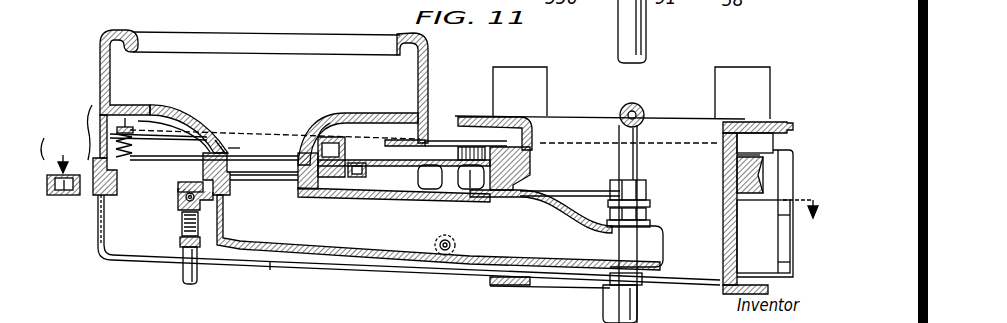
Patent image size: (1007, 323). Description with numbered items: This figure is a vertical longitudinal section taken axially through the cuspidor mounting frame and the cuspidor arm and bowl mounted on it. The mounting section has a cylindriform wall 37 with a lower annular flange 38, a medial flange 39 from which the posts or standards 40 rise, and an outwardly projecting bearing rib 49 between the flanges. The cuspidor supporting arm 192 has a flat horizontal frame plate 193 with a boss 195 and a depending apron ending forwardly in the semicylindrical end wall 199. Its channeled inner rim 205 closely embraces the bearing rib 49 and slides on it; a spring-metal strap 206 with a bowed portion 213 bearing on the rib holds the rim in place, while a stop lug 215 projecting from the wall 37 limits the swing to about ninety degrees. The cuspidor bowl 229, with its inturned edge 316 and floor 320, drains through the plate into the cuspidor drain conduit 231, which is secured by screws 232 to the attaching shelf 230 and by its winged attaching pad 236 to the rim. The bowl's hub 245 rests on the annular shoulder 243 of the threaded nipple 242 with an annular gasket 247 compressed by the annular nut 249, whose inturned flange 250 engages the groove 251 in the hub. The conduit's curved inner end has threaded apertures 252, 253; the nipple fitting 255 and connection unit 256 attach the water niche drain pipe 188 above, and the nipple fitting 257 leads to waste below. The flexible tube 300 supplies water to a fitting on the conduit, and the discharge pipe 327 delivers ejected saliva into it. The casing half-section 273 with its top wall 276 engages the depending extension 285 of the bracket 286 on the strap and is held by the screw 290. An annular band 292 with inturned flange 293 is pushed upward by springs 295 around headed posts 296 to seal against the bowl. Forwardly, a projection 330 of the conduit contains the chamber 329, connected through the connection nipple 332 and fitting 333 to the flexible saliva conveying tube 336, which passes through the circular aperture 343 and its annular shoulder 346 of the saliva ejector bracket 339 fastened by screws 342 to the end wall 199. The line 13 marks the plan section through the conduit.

The section line 13— 13 is at (433, 161).
The cylindriform wall 37 is at (723, 248).
The lower annular horizontal flange 38 is at (768, 291).
The medial flange 39 is at (778, 122).
The posts or standards 40 is at (517, 73).
The annular rectangular bearing rib 49 is at (760, 176).
The water niche drain pipe 188 is at (643, 125).
The cuspidor supporting arm 192 is at (183, 120).
The frame plate 193 is at (412, 201).
The boss 195 is at (470, 200).
The semicylindrical end wall 199 is at (99, 238).
The channeled inner rim 205 is at (725, 164).
The strap 206 is at (766, 136).
The bowed portion 213 is at (764, 213).
The stop lug 215 is at (534, 130).
The cuspidor bowl 229 is at (428, 77).
The attaching shelf 230 is at (366, 176).
The cuspidor drain conduit 231 is at (438, 232).
The screws 232 is at (345, 160).
The winged attaching pad 236 is at (512, 208).
The nipple 242 is at (195, 183).
The annular shoulder 243 is at (308, 193).
The hub 245 is at (240, 150).
The annular gasket 247 is at (253, 176).
The annular nut 249 is at (203, 168).
The inturned flange 250 is at (242, 152).
The groove 251 is at (222, 145).
The threaded aperture 252 is at (650, 223).
The threaded aperture 253 is at (645, 277).
The nipple fitting 255 is at (650, 207).
The connection unit 256 is at (650, 197).
The nipple fitting 257 is at (606, 290).
The casing half-section 273 is at (270, 268).
The horizontal top wall 276 is at (480, 117).
The depending extension 285 is at (764, 234).
The bracket 286 is at (742, 177).
The screw 290 is at (790, 245).
The annular band 292 is at (421, 130).
The inturned flange 293 is at (392, 140).
The springs 295 is at (150, 115).
The headed posts 296 is at (130, 170).
The flexible tube 300 is at (646, 40).
The inturned edge 316 is at (262, 54).
The floor 320 is at (333, 120).
The discharge pipe 327 is at (444, 256).
The chamber 329 is at (180, 201).
The projection 330 is at (272, 182).
The connection nipple 332 is at (182, 220).
The fitting 333 is at (180, 242).
The flexible saliva conveying tube 336 is at (183, 274).
The saliva ejector bracket 339 is at (95, 198).
The screws 342 is at (118, 126).
The circular aperture 343 is at (64, 193).
The annular shoulder 346 is at (116, 145).